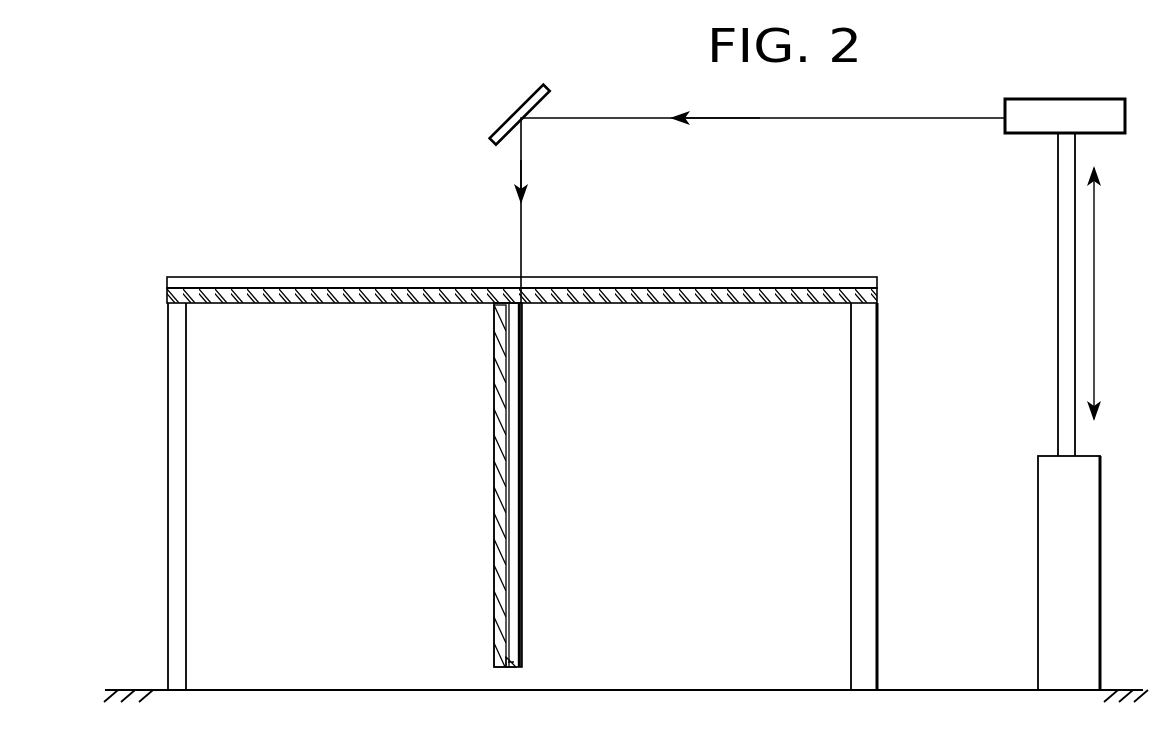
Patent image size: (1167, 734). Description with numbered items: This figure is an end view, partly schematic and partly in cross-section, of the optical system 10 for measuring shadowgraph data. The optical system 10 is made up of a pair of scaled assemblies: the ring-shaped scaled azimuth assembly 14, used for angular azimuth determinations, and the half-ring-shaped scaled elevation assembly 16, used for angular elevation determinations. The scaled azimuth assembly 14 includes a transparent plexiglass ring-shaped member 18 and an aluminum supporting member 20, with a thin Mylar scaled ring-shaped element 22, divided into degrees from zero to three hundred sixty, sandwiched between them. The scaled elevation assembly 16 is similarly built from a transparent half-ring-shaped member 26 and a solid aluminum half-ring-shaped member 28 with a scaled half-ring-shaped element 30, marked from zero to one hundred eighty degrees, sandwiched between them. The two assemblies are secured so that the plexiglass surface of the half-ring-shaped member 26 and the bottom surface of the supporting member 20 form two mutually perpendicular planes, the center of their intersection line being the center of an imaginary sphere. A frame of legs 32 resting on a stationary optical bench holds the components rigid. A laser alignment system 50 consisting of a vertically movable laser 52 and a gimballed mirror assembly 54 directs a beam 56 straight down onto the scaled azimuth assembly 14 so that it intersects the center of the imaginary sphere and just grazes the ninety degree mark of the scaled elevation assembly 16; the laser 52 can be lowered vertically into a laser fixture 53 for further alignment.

The optical system 10 is at (212, 240).
The scaled azimuth assembly 14 is at (532, 269).
The scaled elevation assembly 16 is at (520, 517).
The ring-shaped member 18 is at (256, 283).
The supporting member 20 is at (275, 305).
The scaled ring-shaped element 22 is at (680, 294).
The half-ring-shaped member 26 is at (507, 445).
The solid aluminum half-ring-shaped member 28 is at (496, 397).
The scaled half-ring-shaped element 30 is at (514, 667).
The legs 32 is at (172, 432).
The laser alignment system 50 is at (779, 362).
The laser 52 is at (1085, 99).
The laser fixture 53 is at (1088, 572).
The gimballed mirror assembly 54 is at (505, 105).
The beam 56 is at (521, 230).